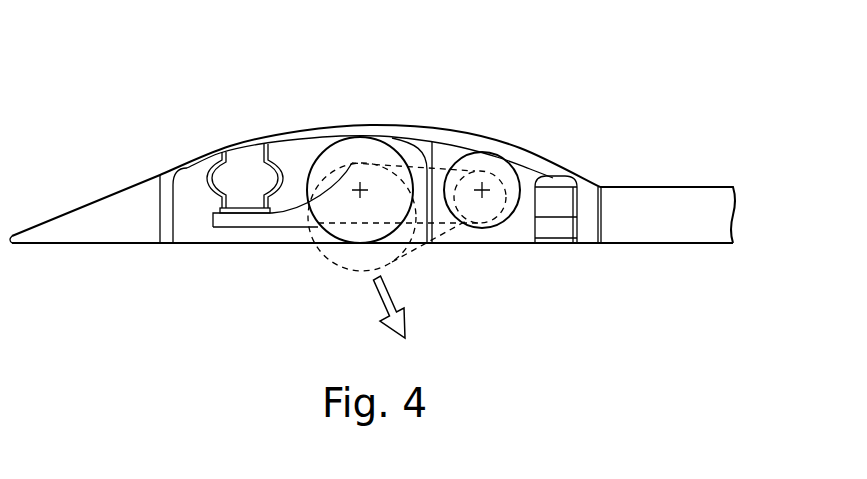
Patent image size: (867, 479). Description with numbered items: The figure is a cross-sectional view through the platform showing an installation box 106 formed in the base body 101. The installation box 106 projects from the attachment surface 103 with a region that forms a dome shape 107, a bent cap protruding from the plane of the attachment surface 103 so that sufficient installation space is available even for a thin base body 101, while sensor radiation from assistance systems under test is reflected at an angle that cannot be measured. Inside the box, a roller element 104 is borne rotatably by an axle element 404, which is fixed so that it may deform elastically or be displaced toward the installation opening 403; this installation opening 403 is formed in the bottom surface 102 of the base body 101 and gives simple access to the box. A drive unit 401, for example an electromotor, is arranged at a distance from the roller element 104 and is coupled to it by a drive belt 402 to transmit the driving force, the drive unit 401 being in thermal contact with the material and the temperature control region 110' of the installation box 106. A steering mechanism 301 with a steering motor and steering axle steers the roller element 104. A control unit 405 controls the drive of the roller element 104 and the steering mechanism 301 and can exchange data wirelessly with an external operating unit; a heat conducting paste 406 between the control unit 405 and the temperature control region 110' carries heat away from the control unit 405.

The base body 101 is at (642, 240).
The bottom surface 102 is at (693, 243).
The attachment surface 103 is at (707, 187).
The roller element 104 is at (352, 245).
The installation box 106 is at (193, 243).
The dome shape 107 is at (298, 132).
The temperature control region 110' is at (579, 264).
The steering mechanism 301 is at (245, 182).
The drive unit 401 is at (487, 232).
The drive belt 402 is at (477, 174).
The installation opening 403 is at (253, 245).
The axle element 404 is at (363, 200).
The control unit 405 is at (560, 187).
The heat conducting paste 406 is at (553, 177).